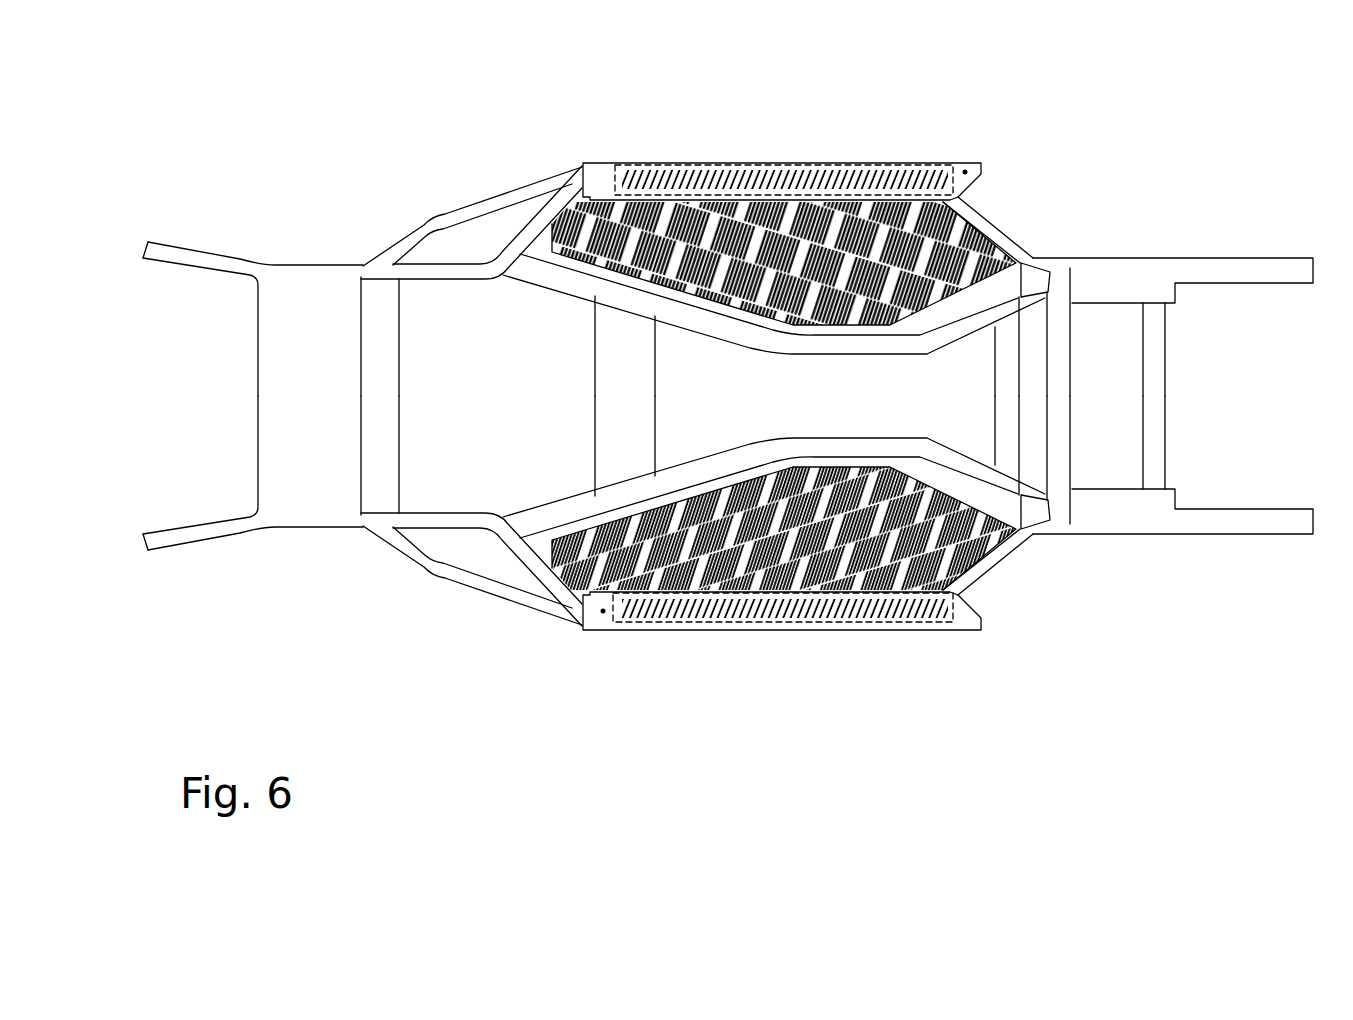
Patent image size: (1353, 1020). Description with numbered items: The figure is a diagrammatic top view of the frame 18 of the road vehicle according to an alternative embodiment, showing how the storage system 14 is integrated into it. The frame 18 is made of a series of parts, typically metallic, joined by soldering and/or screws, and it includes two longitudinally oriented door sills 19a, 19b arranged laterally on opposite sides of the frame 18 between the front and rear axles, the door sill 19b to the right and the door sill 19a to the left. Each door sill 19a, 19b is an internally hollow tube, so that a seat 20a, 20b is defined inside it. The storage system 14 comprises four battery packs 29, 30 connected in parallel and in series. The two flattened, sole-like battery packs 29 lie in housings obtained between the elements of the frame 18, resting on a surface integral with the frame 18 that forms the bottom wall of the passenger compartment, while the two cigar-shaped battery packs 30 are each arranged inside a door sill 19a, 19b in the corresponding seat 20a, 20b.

The storage system 14 is at (548, 676).
The frame 18 is at (1160, 712).
The door sill 19a is at (958, 631).
The door sill 19b is at (698, 162).
The seat 20a is at (603, 613).
The seat 20b is at (965, 170).
The battery pack 29 is at (933, 238).
The battery pack 30 is at (813, 165).